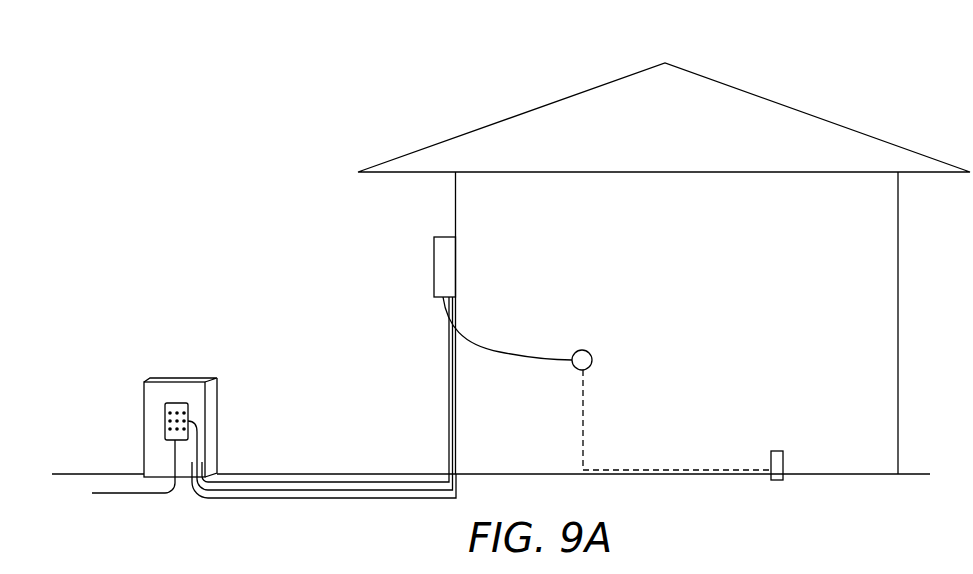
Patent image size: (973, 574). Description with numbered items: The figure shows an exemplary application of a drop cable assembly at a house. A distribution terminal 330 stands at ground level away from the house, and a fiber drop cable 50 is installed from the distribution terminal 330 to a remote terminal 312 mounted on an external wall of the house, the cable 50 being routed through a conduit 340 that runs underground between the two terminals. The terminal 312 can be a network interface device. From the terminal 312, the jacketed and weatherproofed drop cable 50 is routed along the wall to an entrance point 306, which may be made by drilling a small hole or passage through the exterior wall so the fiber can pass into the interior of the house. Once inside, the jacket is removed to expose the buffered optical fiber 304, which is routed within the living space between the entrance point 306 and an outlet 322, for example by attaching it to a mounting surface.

The terminal 312 is at (440, 281).
The entrance point 306 is at (589, 352).
The fiber 304 is at (586, 427).
The outlet 322 is at (784, 460).
The distribution terminal 330 is at (200, 378).
The conduit 340 is at (283, 499).
The fiber drop cable 50 is at (340, 487).